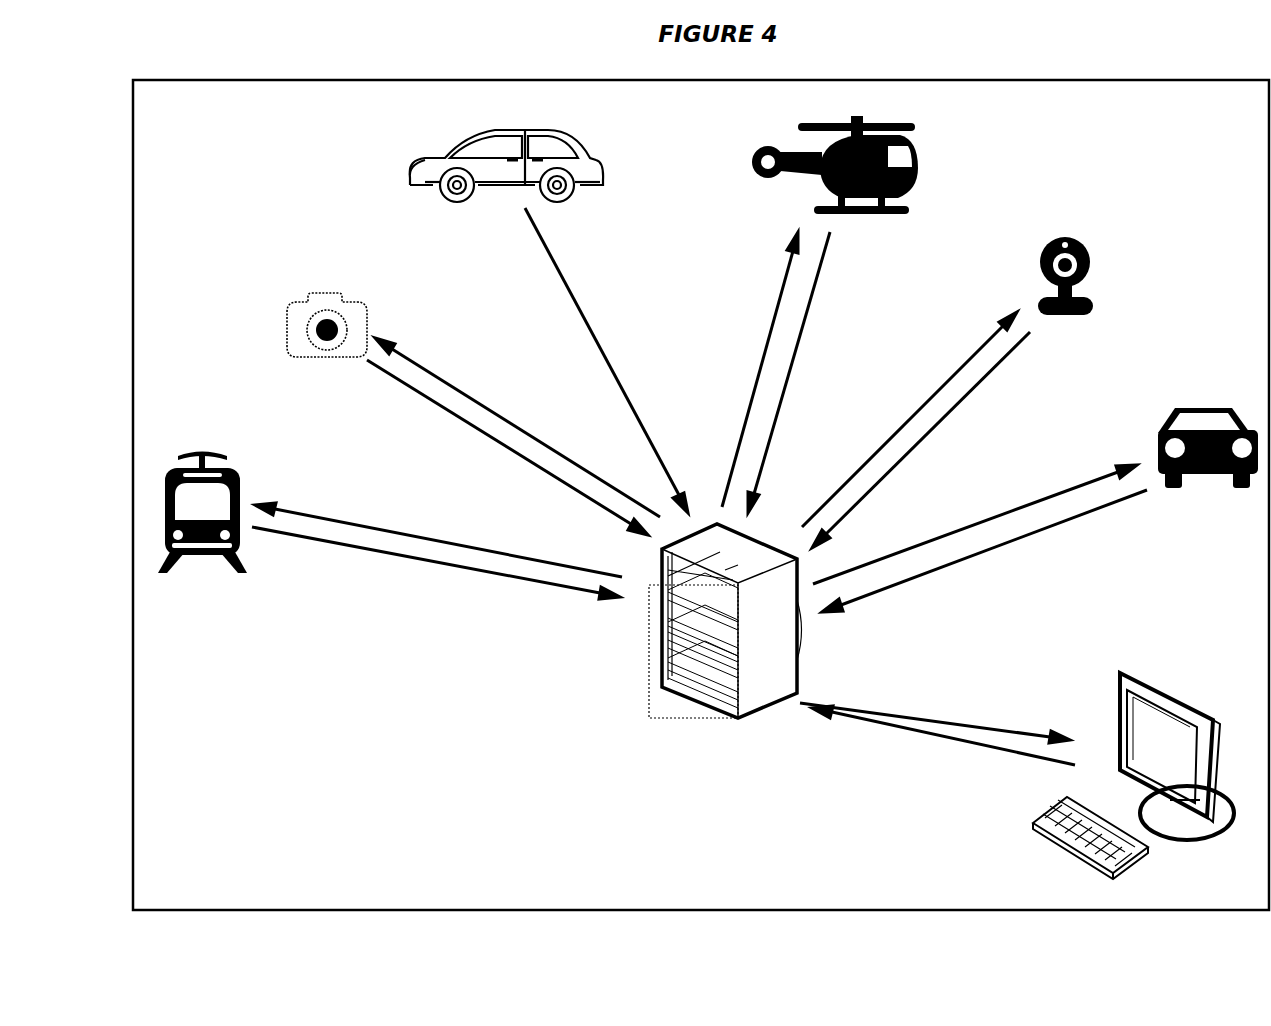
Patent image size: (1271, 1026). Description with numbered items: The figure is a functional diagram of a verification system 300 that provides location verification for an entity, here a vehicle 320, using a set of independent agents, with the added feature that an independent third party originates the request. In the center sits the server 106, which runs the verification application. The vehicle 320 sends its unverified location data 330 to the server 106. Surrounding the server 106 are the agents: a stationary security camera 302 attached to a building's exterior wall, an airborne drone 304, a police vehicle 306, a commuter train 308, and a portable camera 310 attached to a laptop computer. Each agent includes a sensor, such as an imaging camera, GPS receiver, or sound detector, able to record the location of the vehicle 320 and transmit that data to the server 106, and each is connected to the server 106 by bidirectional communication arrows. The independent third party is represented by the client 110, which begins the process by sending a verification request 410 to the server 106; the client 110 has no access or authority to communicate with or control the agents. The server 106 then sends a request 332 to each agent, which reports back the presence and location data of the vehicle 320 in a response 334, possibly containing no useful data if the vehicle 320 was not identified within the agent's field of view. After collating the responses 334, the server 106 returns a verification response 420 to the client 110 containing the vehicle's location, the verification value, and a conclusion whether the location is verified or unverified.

The verification system 300 is at (701, 495).
The vehicle 320 is at (506, 190).
The airborne drone 304 is at (835, 192).
The portable camera 310 is at (1065, 303).
The police vehicle 306 is at (1208, 473).
The stationary security camera 302 is at (327, 351).
The commuter train 308 is at (202, 537).
The server 106 is at (725, 638).
The client 110 is at (1142, 776).
The unverified location data 330 is at (606, 360).
The request 332 is at (975, 524).
The location data transmission response 334 is at (984, 551).
The verification response 420 is at (935, 722).
The verification request 410 is at (943, 735).